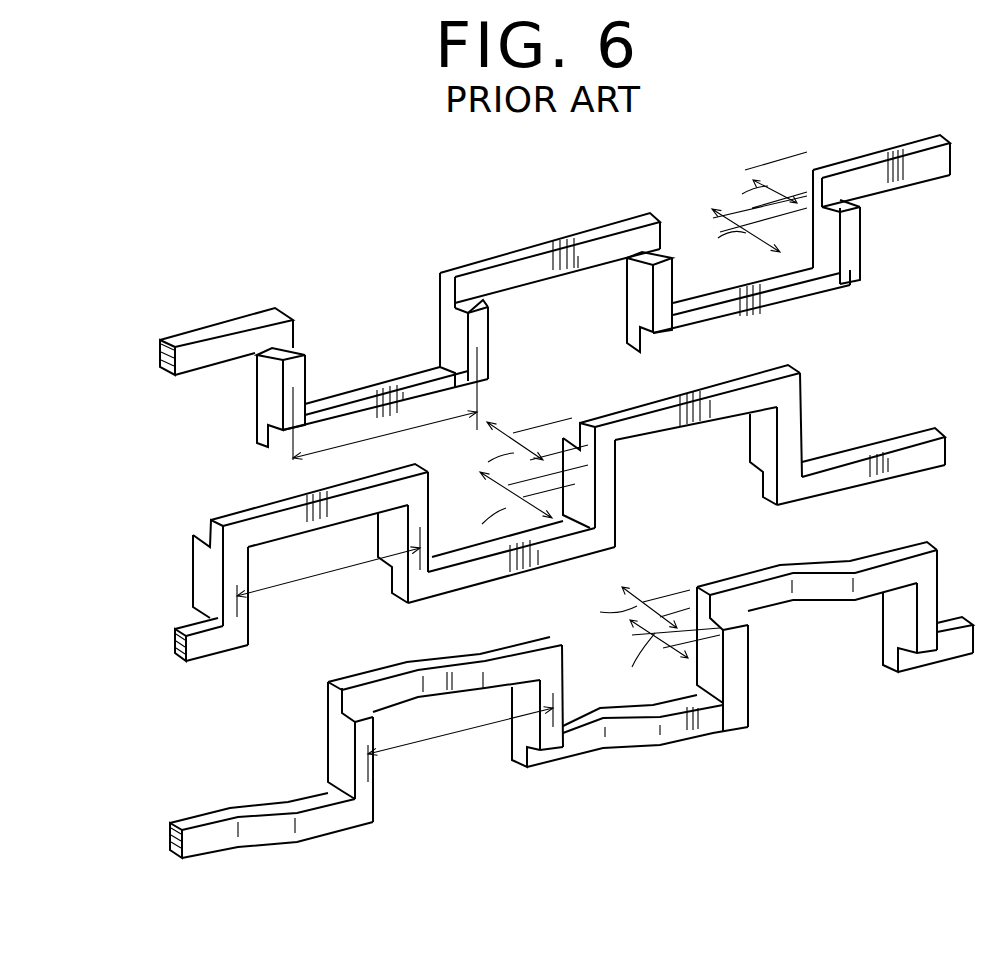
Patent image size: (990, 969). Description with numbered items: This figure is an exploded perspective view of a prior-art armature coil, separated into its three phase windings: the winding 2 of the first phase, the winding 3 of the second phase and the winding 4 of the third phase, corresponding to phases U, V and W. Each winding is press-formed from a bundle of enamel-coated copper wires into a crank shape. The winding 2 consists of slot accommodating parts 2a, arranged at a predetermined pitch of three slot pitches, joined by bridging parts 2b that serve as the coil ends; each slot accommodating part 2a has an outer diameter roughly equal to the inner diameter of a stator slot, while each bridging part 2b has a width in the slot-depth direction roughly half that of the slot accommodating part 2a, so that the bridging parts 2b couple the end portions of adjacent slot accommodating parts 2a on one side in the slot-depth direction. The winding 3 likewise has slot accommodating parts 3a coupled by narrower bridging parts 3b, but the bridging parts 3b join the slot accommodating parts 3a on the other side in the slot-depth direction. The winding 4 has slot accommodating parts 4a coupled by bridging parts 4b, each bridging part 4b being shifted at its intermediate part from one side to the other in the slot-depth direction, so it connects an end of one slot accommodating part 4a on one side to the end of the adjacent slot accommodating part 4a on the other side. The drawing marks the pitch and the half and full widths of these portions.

The winding of the first phase 2 is at (649, 192).
The slot accommodating parts 2a is at (450, 330).
The bridging parts 2b is at (502, 253).
The winding of the second phase 3 is at (828, 383).
The slot accommodating parts 3a is at (767, 443).
The bridging parts 3b is at (643, 437).
The winding of the third phase 4 is at (519, 629).
The slot accommodating parts 4a is at (747, 660).
The bridging parts 4b is at (861, 590).